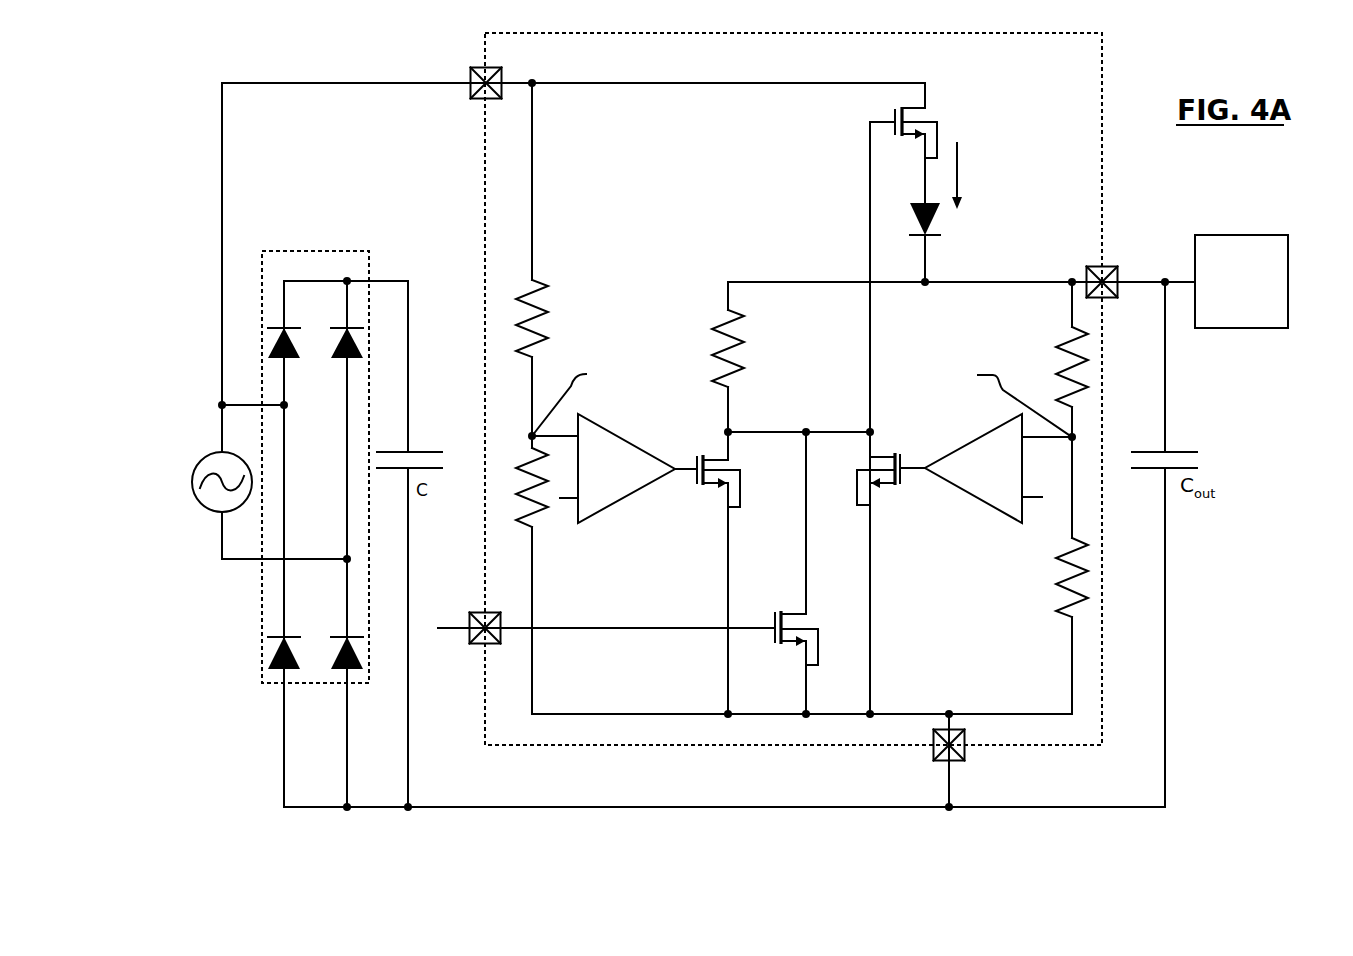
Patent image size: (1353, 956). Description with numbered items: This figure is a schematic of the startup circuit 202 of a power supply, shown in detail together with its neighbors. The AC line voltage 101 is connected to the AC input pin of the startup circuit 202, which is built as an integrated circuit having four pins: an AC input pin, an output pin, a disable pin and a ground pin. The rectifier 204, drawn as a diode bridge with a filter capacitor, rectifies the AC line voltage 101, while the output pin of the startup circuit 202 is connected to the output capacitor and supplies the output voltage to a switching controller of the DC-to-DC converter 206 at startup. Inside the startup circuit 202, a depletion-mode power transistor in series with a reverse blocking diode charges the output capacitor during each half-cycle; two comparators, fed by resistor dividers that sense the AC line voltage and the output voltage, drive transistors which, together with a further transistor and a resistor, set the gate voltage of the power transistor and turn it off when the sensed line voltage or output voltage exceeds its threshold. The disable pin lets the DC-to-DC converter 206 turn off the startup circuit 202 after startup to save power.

The AC line voltage 101 is at (199, 458).
The startup circuit 202 is at (795, 33).
The rectifier 204 is at (322, 251).
The DC-to-DC converter 206 is at (1245, 235).